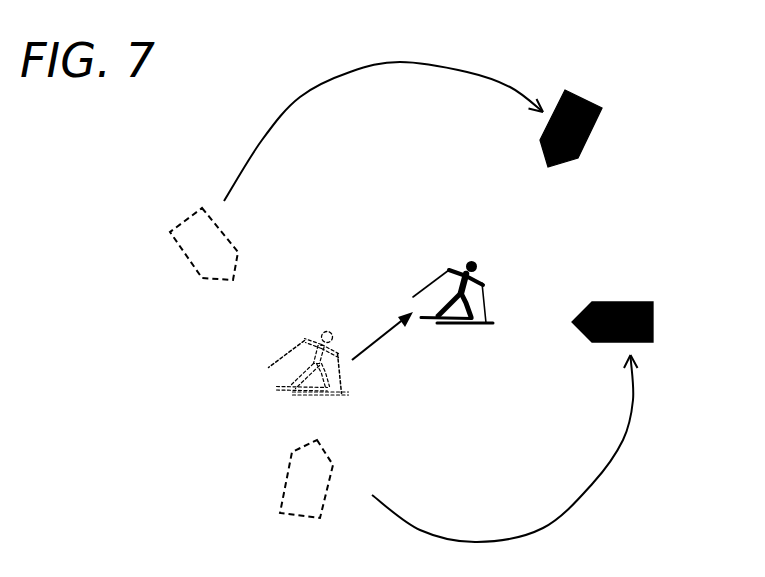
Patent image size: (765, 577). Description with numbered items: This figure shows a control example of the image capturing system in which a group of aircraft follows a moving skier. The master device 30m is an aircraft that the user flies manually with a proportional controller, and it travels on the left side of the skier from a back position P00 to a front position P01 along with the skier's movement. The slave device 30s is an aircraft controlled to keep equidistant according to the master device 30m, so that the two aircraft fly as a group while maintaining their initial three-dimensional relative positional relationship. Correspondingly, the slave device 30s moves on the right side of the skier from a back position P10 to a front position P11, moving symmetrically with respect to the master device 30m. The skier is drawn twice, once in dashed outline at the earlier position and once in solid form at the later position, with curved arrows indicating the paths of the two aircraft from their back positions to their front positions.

The back position of master device P00 is at (184, 231).
The front position of master device P01 is at (571, 113).
The back position of slave device P10 is at (279, 479).
The front position of slave device P11 is at (640, 343).
The master device 30m is at (196, 250).
The slave device 30s is at (279, 499).